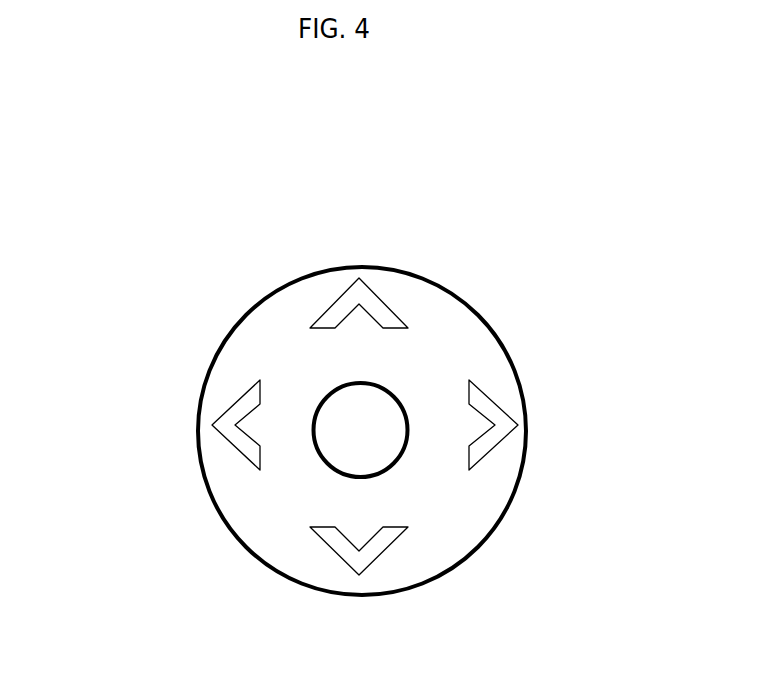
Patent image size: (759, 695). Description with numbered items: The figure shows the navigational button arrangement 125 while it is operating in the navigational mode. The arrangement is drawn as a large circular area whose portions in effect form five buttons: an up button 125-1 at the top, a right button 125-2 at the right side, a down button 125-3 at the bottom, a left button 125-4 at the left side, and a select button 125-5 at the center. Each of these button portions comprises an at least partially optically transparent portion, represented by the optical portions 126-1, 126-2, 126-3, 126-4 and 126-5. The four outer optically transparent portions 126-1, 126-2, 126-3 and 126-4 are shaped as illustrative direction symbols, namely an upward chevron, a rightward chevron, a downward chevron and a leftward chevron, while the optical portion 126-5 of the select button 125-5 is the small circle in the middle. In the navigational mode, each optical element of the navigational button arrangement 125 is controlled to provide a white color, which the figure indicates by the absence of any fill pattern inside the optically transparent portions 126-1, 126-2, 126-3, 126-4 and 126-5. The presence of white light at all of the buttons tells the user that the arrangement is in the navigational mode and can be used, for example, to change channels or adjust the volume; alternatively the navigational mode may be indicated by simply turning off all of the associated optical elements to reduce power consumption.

The navigational button arrangement 125 is at (250, 290).
The up button 125-1 is at (403, 227).
The right button 125-2 is at (591, 397).
The down button 125-3 is at (237, 596).
The left button 125-4 is at (145, 433).
The select button 125-5 is at (520, 494).
The optical portion 126-1 is at (343, 305).
The optical portion 126-2 is at (493, 440).
The optical portion 126-3 is at (335, 539).
The optical portion 126-4 is at (238, 415).
The optical portion 126-5 is at (372, 438).